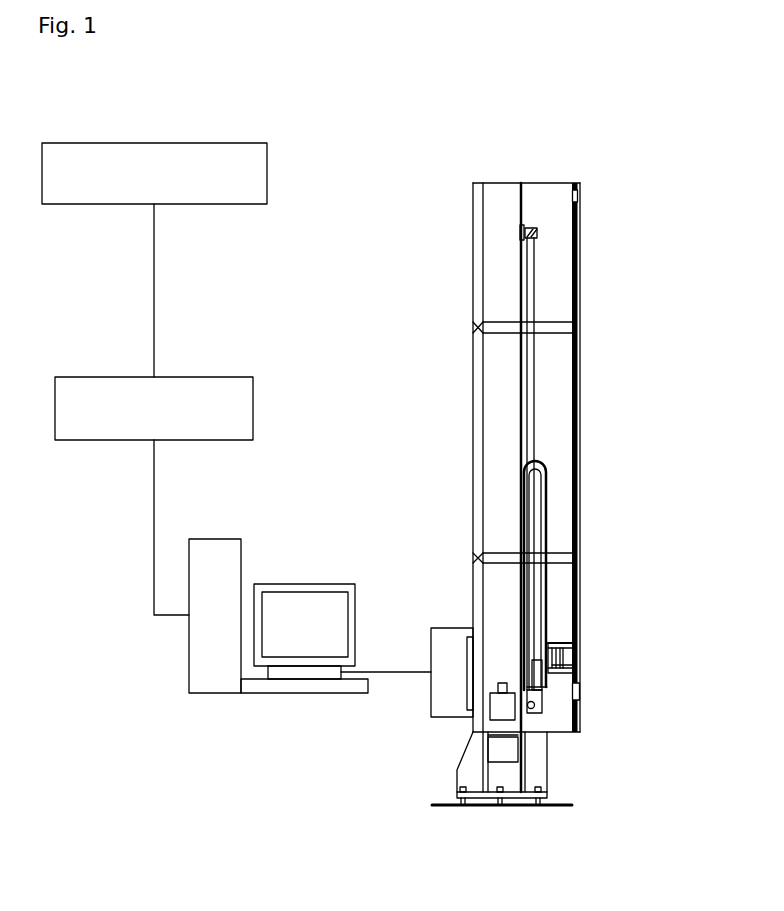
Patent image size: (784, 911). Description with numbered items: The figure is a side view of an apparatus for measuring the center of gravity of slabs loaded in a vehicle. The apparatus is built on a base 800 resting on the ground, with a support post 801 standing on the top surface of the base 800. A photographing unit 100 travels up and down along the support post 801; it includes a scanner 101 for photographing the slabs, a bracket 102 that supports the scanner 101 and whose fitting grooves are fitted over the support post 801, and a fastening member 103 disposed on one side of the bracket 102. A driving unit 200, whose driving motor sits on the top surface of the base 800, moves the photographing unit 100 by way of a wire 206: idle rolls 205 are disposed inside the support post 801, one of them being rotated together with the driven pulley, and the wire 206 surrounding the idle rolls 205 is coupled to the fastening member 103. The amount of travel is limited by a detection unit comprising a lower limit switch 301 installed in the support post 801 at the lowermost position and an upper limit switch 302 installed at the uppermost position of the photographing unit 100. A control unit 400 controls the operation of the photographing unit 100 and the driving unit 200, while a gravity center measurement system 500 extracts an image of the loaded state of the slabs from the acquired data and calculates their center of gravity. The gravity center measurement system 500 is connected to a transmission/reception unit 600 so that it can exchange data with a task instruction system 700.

The task instruction system 700 is at (135, 143).
The transmission/reception unit 600 is at (90, 441).
The gravity center measurement system 500 is at (300, 584).
The control unit 400 is at (447, 690).
The support post 801 is at (477, 388).
The upper limit switch 302 is at (582, 197).
The idle roll 205 is at (537, 227).
The wire 206 is at (535, 278).
The fastening member 103 is at (535, 668).
The photographing unit 100 is at (584, 675).
The scanner 101 is at (553, 643).
The bracket 102 is at (562, 665).
The lower limit switch 301 is at (582, 697).
The driving unit 200 is at (544, 730).
The base 800 is at (473, 798).